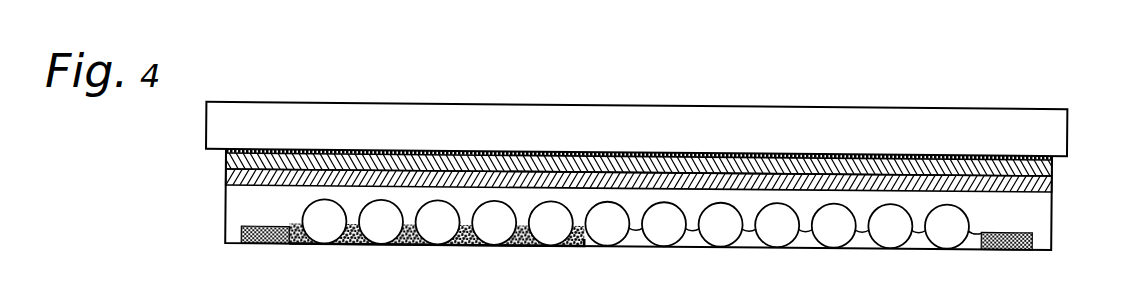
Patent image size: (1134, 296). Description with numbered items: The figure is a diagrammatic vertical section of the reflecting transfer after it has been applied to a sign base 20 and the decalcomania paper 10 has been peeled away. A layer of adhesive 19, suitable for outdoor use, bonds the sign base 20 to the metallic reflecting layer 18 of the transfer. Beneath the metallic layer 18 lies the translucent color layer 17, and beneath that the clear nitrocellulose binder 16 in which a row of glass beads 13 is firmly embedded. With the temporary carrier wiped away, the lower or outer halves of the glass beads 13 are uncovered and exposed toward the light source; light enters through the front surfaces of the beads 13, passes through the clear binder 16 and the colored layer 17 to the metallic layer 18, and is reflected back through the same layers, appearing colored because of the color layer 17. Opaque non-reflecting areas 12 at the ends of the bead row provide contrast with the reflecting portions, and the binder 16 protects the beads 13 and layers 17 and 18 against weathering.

The decalcomania paper 10 is at (412, 241).
The non-reflecting areas 12 is at (997, 244).
The glass beads 13 is at (713, 226).
The clear binder 16 is at (1035, 200).
The color layer 17 is at (1048, 176).
The metallic reflecting layer 18 is at (1052, 161).
The adhesive 19 is at (222, 153).
The sign base 20 is at (222, 135).